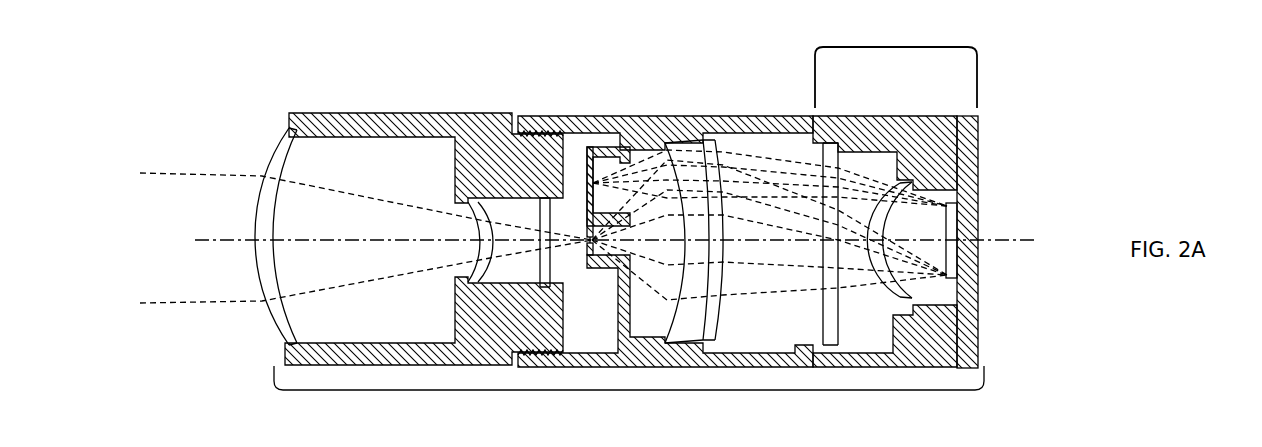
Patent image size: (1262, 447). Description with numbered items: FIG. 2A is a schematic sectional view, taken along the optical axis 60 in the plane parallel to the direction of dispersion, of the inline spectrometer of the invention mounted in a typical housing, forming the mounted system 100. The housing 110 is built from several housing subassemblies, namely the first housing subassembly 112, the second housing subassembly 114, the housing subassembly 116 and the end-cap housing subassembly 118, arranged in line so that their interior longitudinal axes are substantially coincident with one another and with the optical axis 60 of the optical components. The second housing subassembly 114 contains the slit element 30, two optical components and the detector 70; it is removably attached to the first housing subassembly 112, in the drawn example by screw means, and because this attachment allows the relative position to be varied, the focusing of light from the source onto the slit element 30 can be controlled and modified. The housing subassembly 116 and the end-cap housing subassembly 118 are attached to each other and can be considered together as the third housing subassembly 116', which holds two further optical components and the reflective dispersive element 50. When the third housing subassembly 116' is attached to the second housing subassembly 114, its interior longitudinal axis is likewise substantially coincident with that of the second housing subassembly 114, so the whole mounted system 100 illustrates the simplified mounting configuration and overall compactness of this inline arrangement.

The mounted system 100 is at (262, 94).
The housing 110 is at (630, 390).
The first housing subassembly 112 is at (407, 113).
The second housing subassembly 114 is at (673, 116).
The housing subassembly 116 is at (885, 220).
The third housing subassembly 116' is at (925, 66).
The end-cap housing subassembly 118 is at (980, 198).
The optical axis 60 is at (222, 238).
The detector 70 is at (587, 183).
The slit element 30 is at (591, 246).
The reflective dispersive element 50 is at (955, 270).